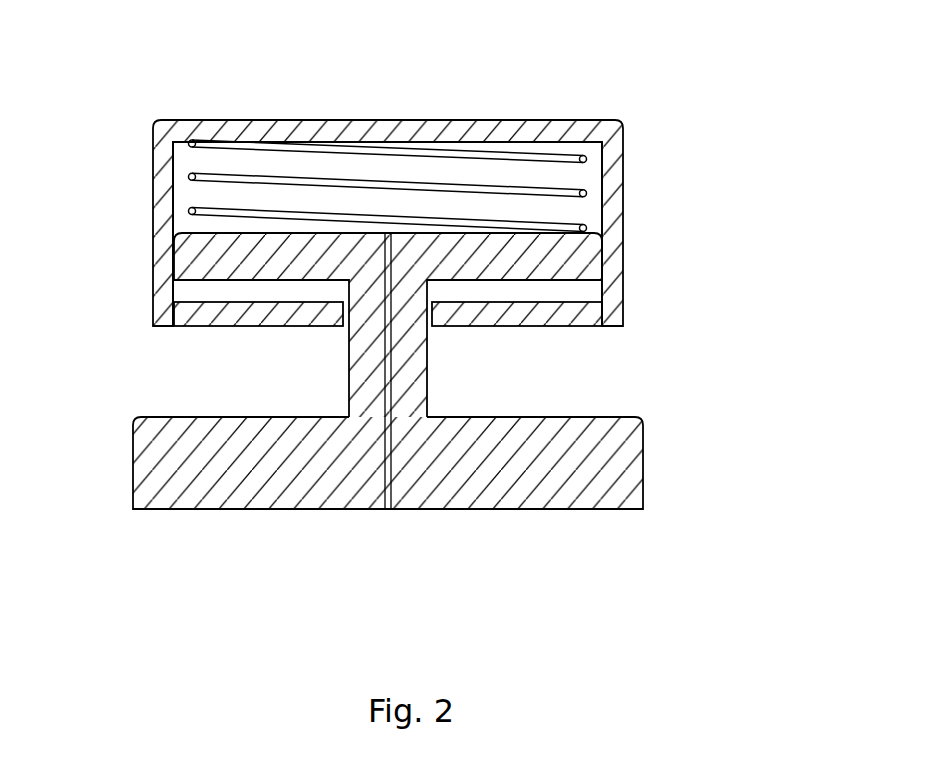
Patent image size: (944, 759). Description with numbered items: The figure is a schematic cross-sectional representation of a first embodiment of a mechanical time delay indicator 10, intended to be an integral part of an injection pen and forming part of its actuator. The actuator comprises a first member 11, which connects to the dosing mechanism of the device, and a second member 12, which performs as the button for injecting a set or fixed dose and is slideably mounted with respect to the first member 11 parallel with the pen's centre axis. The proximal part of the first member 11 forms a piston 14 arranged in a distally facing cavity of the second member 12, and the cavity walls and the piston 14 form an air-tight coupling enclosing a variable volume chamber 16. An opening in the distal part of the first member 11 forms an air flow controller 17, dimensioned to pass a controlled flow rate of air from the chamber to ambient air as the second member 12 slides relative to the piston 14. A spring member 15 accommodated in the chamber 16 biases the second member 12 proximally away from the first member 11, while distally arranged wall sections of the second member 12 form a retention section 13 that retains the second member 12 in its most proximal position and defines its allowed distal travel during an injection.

The time delay indicator 10 is at (712, 150).
The first member 11 is at (588, 485).
The second member 12 is at (208, 130).
The retention section 13 is at (566, 312).
The piston 14 is at (223, 257).
The spring member 15 is at (542, 153).
The variable volume chamber 16 is at (443, 168).
The air flow controller 17 is at (389, 499).